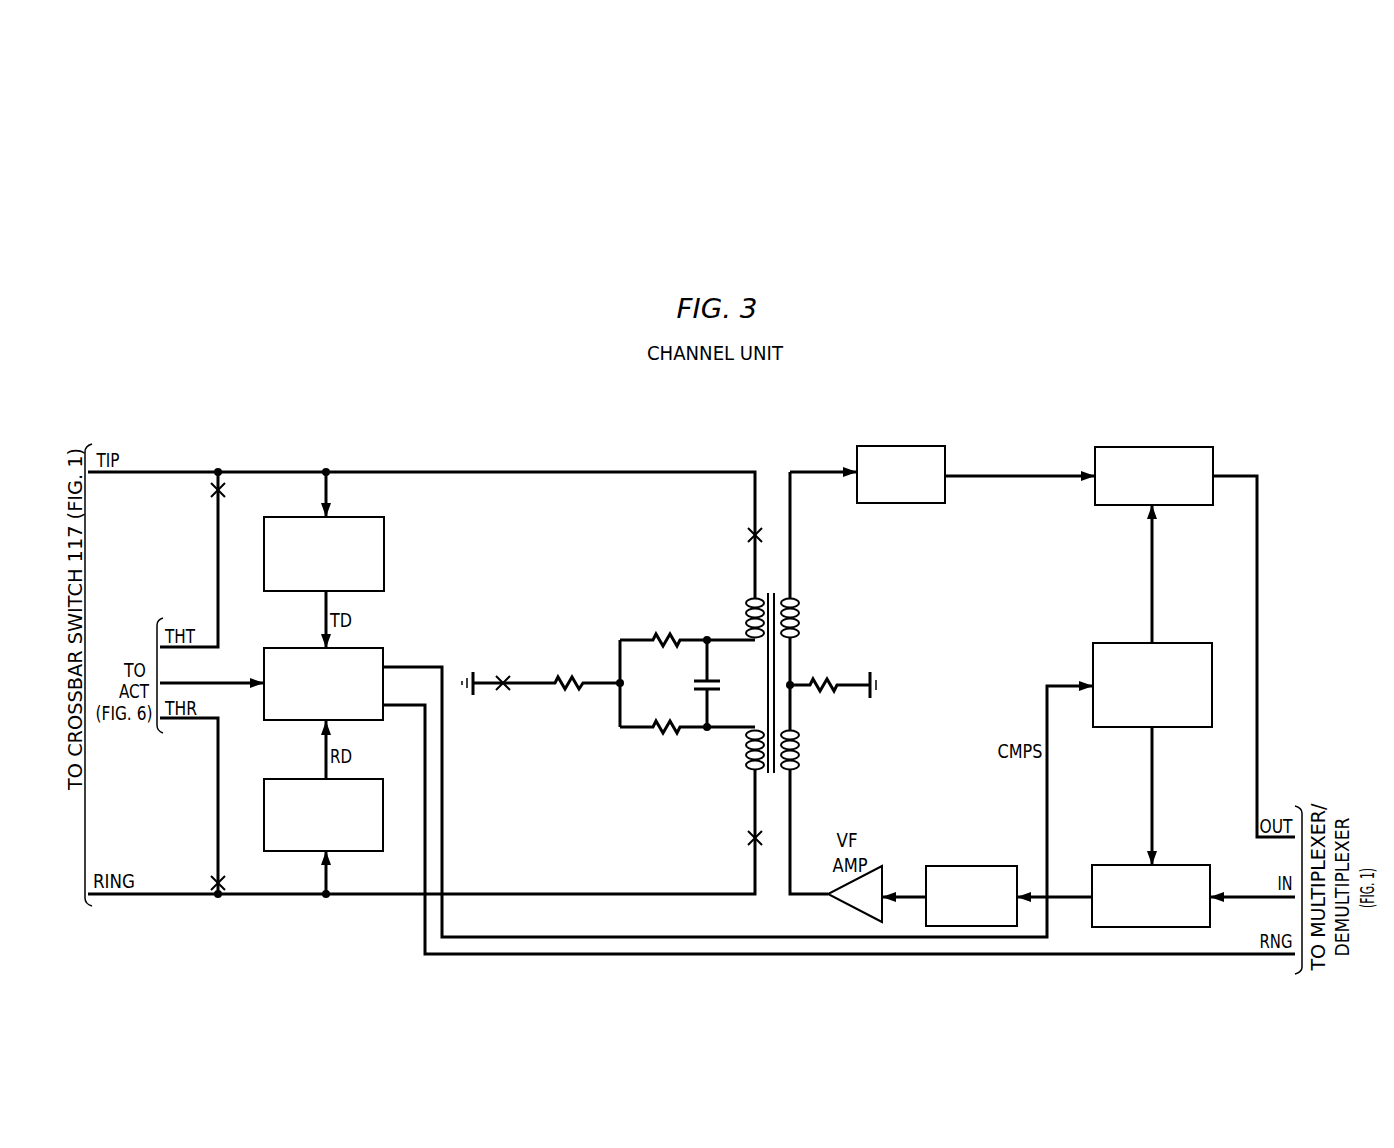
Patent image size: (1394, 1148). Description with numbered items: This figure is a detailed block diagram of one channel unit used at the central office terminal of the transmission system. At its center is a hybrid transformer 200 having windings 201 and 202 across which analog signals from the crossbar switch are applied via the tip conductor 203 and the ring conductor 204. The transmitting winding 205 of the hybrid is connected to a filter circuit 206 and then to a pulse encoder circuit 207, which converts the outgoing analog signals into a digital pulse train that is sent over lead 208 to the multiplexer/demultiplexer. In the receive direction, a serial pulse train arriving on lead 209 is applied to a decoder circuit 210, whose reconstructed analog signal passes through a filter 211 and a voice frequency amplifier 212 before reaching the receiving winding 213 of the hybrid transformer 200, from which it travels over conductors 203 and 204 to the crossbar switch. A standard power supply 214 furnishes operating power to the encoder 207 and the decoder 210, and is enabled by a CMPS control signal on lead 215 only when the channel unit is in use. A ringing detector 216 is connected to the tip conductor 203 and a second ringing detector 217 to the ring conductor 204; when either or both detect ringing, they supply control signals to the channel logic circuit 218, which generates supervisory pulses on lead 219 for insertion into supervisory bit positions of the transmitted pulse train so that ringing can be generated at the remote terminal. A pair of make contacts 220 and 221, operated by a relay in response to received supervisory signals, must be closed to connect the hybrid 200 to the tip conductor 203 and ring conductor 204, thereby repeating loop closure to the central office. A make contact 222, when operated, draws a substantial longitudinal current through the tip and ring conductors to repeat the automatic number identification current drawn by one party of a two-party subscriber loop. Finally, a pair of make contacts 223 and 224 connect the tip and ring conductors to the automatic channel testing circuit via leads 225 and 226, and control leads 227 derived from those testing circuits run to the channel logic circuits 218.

The hybrid transformer 200 is at (788, 583).
The winding 201 is at (740, 618).
The winding 202 is at (736, 752).
The tip conductor 203 is at (421, 523).
The ring conductor 204 is at (421, 832).
The transmitting winding 205 is at (806, 618).
The filter circuit 206 is at (903, 446).
The pulse encoder circuit 207 is at (1153, 446).
The lead 208 is at (1257, 697).
The lead 209 is at (1240, 896).
The decoder circuit 210 is at (1125, 870).
The filter 211 is at (975, 866).
The voice frequency amplifier 212 is at (852, 897).
The receiving winding 213 is at (802, 750).
The power supply 214 is at (1107, 650).
The lead 215 is at (1047, 690).
The ringing detector 216 is at (384, 566).
The second ringing detector 217 is at (338, 846).
The channel logic circuit 218 is at (362, 656).
The lead 219 is at (839, 844).
The make contact 220 is at (737, 531).
The make contact 221 is at (739, 848).
The make contact 222 is at (541, 684).
The make contact 223 is at (212, 491).
The make contact 224 is at (212, 874).
The lead 225 is at (218, 562).
The lead 226 is at (218, 790).
The control leads 227 is at (212, 671).